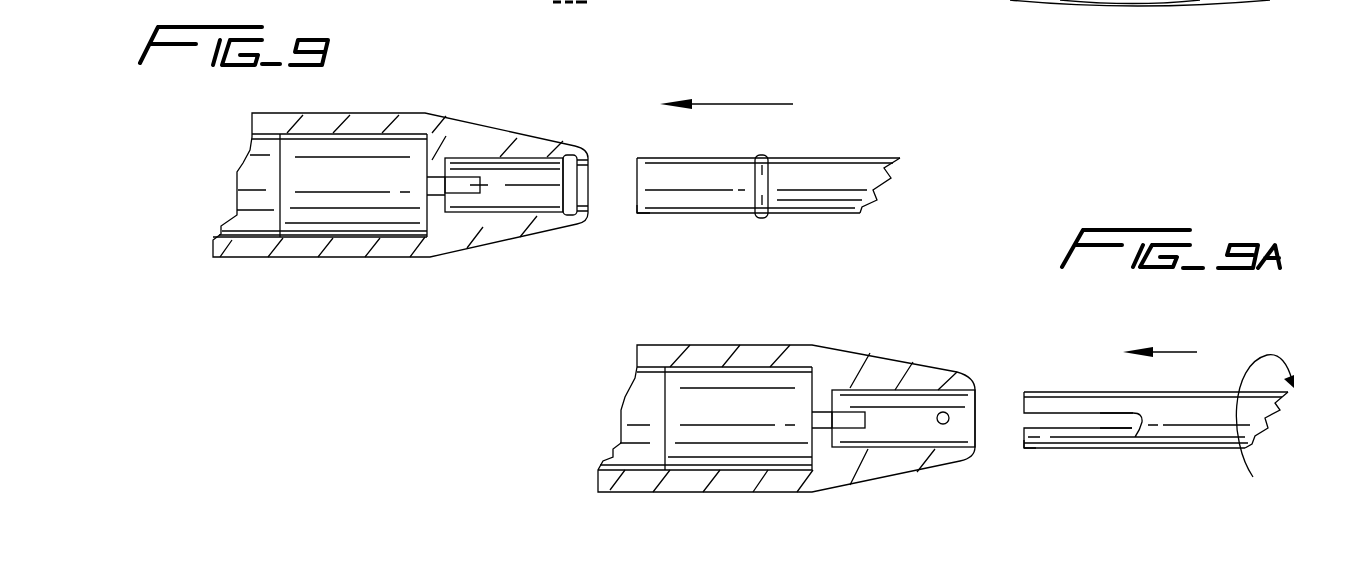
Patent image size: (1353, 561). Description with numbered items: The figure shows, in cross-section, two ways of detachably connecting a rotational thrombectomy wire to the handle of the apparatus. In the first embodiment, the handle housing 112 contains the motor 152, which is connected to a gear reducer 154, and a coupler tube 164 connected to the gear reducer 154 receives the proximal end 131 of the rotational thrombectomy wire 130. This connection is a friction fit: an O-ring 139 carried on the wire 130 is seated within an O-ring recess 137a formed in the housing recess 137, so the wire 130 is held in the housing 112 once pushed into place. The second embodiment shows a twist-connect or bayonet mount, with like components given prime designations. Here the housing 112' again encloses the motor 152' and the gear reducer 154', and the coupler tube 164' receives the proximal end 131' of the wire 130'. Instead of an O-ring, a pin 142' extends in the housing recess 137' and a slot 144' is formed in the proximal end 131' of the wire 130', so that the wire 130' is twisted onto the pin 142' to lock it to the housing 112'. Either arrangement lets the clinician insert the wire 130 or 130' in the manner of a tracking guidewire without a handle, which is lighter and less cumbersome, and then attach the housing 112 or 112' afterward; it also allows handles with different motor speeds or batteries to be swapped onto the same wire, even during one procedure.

In FIG. 9, the housing 112 is at (400, 213).
In FIG. 9, the rotational thrombectomy wire 130 is at (781, 162).
In FIG. 9, the proximal end 131 is at (670, 237).
In FIG. 9, the housing recess 137 is at (510, 221).
In FIG. 9, the O-ring recess 137a is at (570, 170).
In FIG. 9, the O-ring 139 is at (762, 218).
In FIG. 9, the motor 152 is at (227, 227).
In FIG. 9, the gear reducer 154 is at (370, 151).
In FIG. 9, the coupler tube 164 is at (501, 142).
In FIG. 9A, the housing 112' is at (786, 439).
In FIG. 9A, the wire 130' is at (1150, 394).
In FIG. 9A, the proximal end 131' is at (1064, 473).
In FIG. 9A, the housing recess 137' is at (903, 457).
In FIG. 9A, the pin 142' is at (976, 460).
In FIG. 9A, the slot 144' is at (1148, 459).
In FIG. 9A, the motor 152' is at (607, 376).
In FIG. 9A, the gear reducer 154' is at (761, 381).
In FIG. 9A, the coupler tube 164' is at (889, 373).